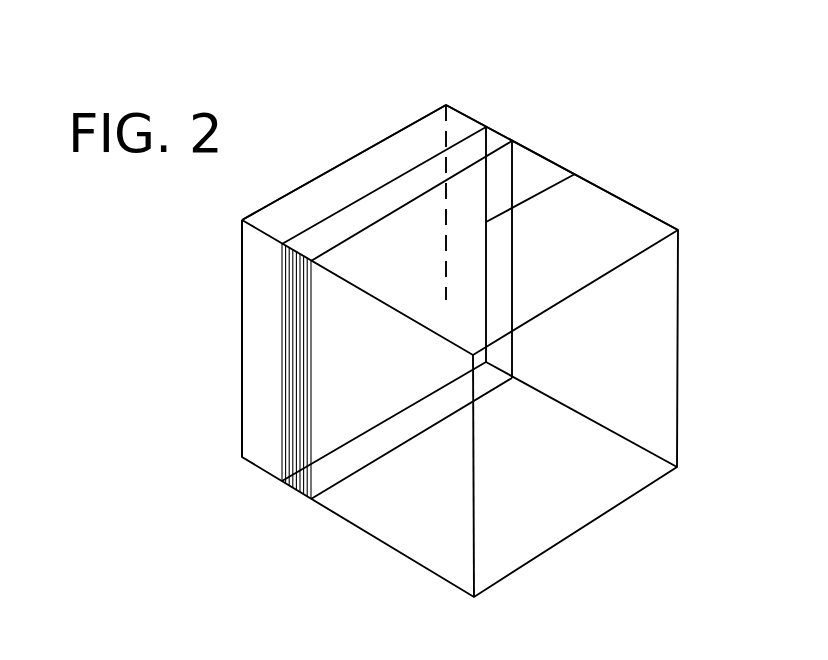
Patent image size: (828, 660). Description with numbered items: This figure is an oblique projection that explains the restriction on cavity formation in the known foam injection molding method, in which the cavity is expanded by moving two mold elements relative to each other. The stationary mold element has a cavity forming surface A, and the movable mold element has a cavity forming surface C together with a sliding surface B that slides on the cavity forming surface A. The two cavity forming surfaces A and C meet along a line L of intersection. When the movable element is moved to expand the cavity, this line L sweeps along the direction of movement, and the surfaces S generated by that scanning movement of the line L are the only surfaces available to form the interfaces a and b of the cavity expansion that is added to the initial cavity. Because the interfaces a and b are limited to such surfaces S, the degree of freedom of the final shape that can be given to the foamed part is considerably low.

The cavity forming surface of the stationary mold element A is at (455, 205).
The sliding surface B is at (497, 183).
The cavity forming surface of the movable mold element C is at (402, 227).
The interface of the cavity expansion a is at (467, 185).
The interface of the cavity expansion b is at (253, 381).
The line of intersection L is at (574, 175).
The surfaces S is at (290, 443).